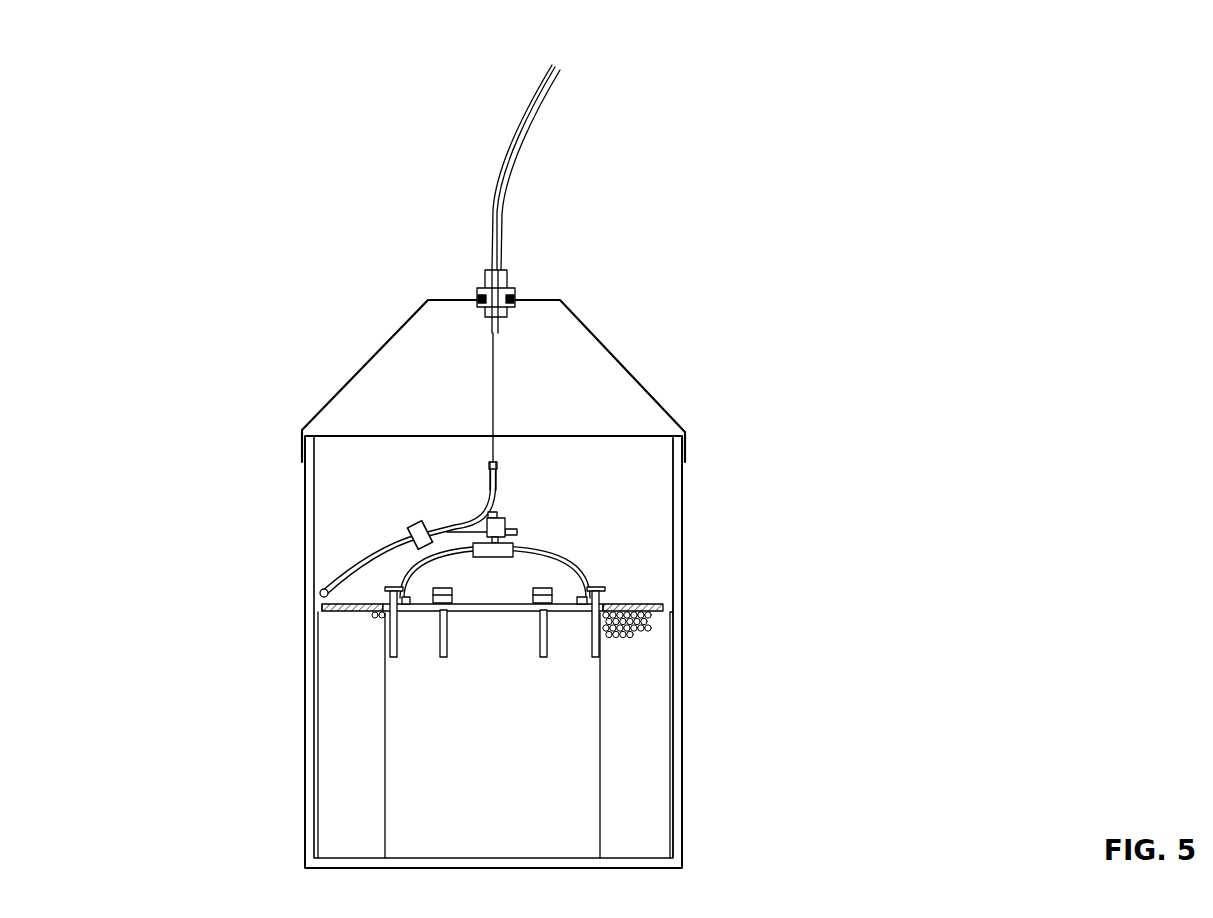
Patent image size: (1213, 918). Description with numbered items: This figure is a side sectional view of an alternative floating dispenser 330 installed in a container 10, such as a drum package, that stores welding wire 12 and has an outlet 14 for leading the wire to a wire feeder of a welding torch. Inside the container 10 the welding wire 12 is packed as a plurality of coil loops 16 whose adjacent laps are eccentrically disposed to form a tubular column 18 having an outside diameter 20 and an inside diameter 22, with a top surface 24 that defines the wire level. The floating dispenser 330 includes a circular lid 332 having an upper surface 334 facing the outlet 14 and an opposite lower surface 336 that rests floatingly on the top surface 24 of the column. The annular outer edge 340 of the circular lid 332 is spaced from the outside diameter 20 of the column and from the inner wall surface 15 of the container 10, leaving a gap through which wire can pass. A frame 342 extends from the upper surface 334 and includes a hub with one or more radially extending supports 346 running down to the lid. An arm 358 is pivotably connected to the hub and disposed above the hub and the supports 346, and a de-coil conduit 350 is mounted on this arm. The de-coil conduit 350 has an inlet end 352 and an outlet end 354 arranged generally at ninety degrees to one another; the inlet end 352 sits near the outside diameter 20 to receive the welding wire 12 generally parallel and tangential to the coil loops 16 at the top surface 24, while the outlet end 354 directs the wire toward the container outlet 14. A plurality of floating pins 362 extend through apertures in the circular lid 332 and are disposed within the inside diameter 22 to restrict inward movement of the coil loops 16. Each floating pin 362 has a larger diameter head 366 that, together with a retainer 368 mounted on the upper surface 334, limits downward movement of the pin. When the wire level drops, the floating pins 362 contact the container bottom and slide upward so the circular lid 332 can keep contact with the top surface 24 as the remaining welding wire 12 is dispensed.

The container 10 is at (682, 787).
The welding wire 12 is at (496, 385).
The outlet 14 is at (483, 272).
The inner wall surface 15 is at (673, 490).
The coil loops 16 is at (645, 628).
The tubular column 18 is at (648, 737).
The outside diameter 20 is at (670, 658).
The inside diameter 22 is at (598, 833).
The top surface 24 is at (320, 600).
The floating dispenser 330 is at (575, 483).
The circular lid 332 is at (366, 602).
The upper surface 334 is at (633, 603).
The lower surface 336 is at (583, 612).
The annular outer edge 340 is at (665, 610).
The frame 342 is at (572, 556).
The radially extending supports 346 is at (533, 550).
The de-coil conduit 350 is at (380, 543).
The inlet end 352 is at (319, 593).
The outlet end 354 is at (489, 460).
The arm 358 is at (477, 528).
The floating pins 362 is at (390, 645).
The head 366 is at (438, 583).
The retainer 368 is at (537, 597).